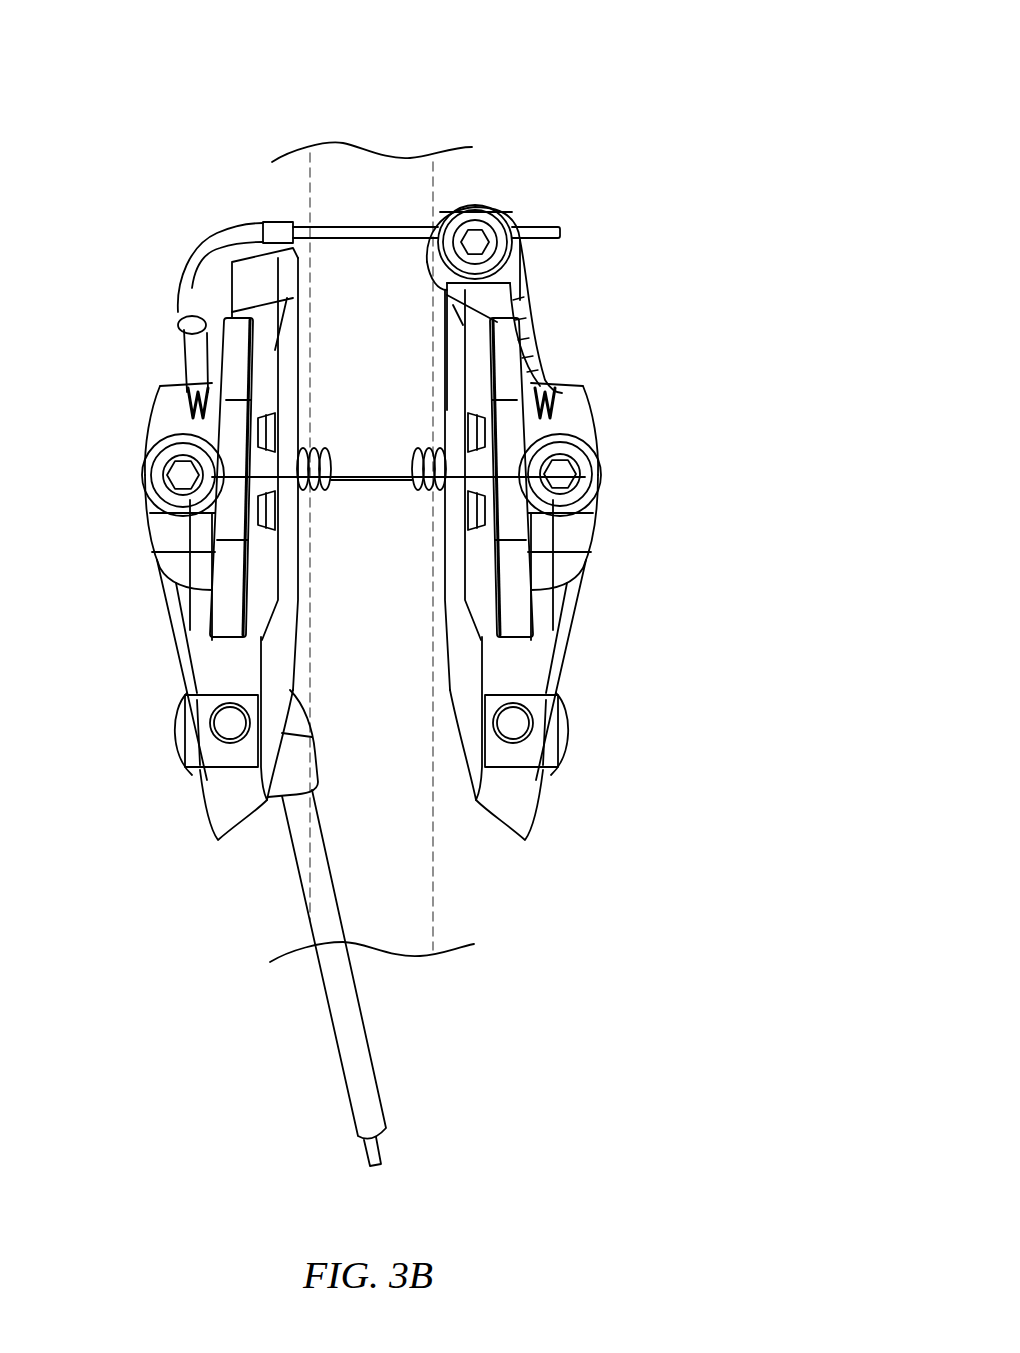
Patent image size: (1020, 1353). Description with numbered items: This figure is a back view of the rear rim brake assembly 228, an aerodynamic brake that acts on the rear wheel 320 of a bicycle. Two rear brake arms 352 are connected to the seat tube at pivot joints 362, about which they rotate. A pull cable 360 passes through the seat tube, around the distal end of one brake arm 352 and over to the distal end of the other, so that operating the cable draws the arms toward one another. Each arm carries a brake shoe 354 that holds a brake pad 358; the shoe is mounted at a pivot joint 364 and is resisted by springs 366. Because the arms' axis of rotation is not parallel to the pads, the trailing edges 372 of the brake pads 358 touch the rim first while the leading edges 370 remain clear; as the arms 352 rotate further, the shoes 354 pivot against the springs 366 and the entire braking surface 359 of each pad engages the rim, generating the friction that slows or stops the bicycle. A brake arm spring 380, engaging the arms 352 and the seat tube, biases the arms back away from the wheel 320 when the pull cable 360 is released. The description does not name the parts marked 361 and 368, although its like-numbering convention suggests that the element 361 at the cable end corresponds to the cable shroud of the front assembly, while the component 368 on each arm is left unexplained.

The rear rim brake assembly 228 is at (603, 88).
The rear wheel 320 is at (326, 183).
The rear brake arms 352 is at (190, 611).
The brake shoes 354 is at (237, 337).
The brake pads 358 is at (262, 314).
The braking surface 359 is at (273, 553).
The pull cable 360 is at (378, 227).
The actuation rod 361 is at (297, 849).
The pivot joint 362 is at (222, 725).
The pivot joint 364 is at (176, 473).
The springs 366 is at (190, 384).
The bracket 368 is at (158, 538).
The leading edges 370 is at (267, 623).
The trailing edges 372 is at (261, 313).
The brake arm spring 380 is at (413, 467).